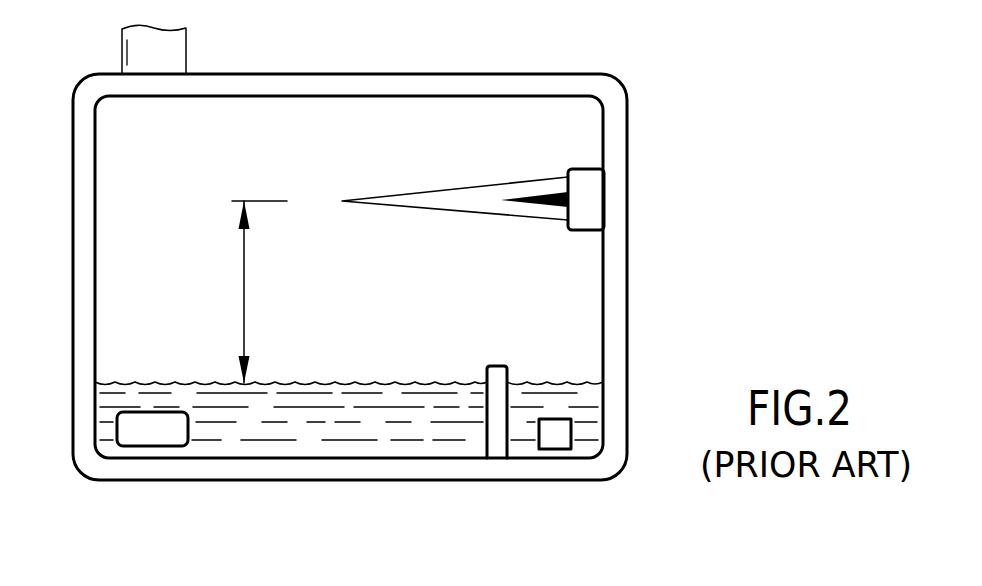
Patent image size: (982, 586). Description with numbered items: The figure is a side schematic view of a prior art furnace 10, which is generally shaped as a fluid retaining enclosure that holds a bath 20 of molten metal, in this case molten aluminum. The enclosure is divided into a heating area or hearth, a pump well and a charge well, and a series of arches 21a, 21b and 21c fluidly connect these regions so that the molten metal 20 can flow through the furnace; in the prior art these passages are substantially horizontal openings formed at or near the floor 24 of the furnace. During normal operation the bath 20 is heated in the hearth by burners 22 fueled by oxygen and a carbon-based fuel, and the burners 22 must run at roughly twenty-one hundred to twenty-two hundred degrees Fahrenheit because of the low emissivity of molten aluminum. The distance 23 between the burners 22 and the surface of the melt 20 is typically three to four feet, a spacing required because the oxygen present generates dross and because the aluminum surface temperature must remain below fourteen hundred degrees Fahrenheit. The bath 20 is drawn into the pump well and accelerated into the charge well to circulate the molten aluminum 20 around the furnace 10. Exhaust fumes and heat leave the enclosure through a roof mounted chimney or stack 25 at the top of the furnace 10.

The furnace 10 is at (664, 182).
The bath of molten metal 20 is at (373, 400).
The arch 21a is at (560, 438).
The arch 21b is at (483, 435).
The arch 21c is at (150, 432).
The burners 22 is at (590, 217).
The distance 23 is at (244, 295).
The floor 24 is at (245, 455).
The stack 25 is at (173, 53).